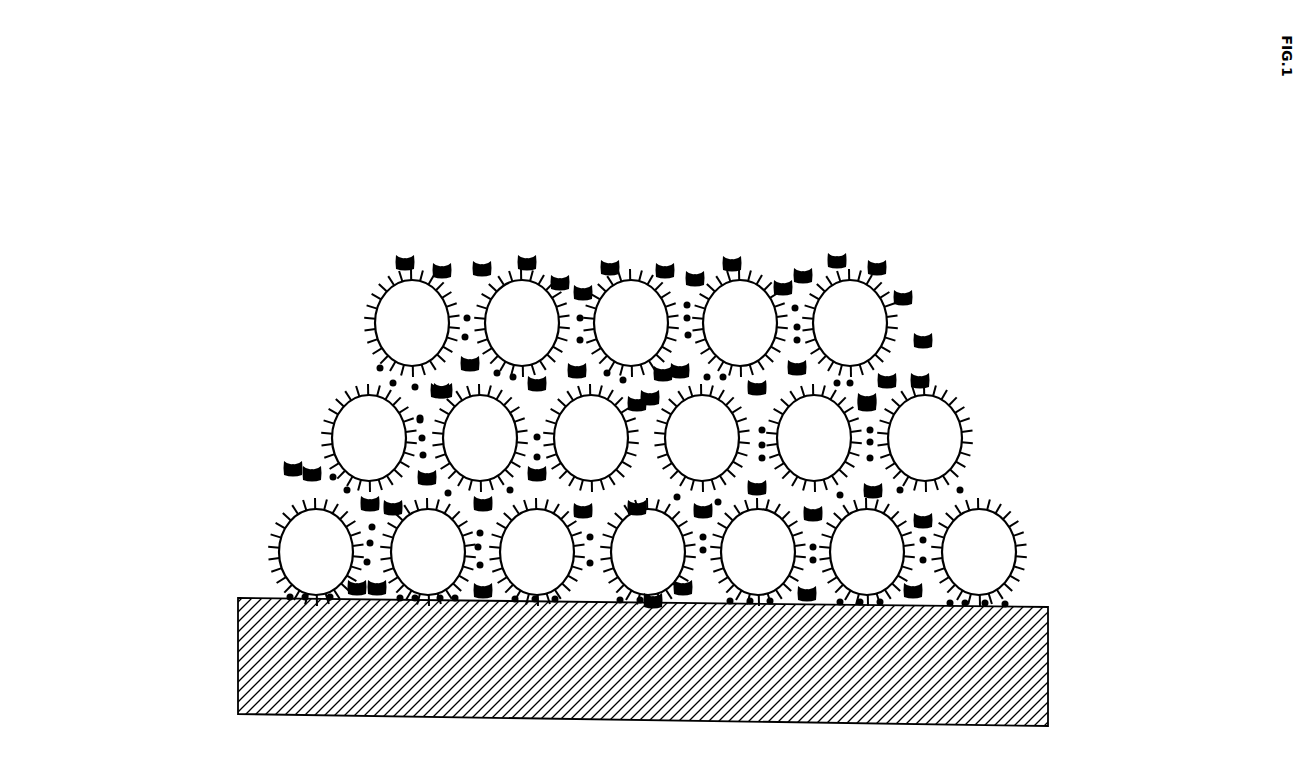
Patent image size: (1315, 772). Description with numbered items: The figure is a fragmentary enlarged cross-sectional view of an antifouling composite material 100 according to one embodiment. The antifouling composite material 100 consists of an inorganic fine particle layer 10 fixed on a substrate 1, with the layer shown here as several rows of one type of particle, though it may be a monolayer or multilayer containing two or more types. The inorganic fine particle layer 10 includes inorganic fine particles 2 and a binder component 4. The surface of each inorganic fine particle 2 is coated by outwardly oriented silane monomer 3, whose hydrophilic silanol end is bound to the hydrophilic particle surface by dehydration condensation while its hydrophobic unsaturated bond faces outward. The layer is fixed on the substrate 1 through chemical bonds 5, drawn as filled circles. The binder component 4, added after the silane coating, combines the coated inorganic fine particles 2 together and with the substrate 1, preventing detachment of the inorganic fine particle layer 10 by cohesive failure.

The substrate 1 is at (1050, 660).
The inorganic fine particle 2 is at (1015, 536).
The silane monomer 3 is at (964, 408).
The binder component 4 is at (935, 332).
The chemical bond 5 is at (957, 480).
The inorganic fine particle layer 10 is at (163, 237).
The antifouling composite material 100 is at (674, 250).